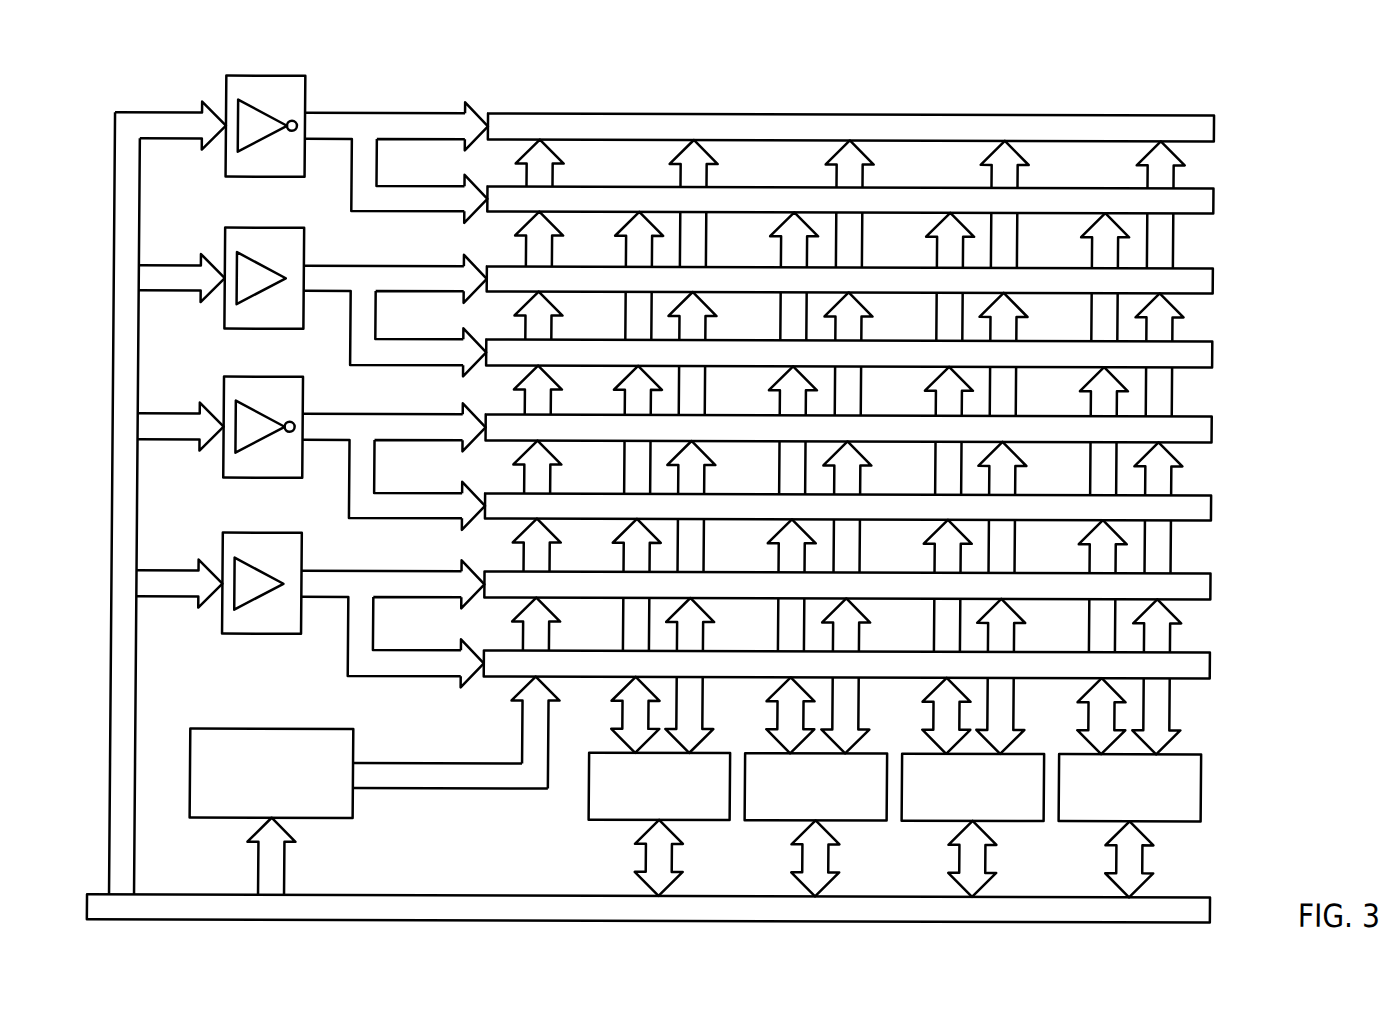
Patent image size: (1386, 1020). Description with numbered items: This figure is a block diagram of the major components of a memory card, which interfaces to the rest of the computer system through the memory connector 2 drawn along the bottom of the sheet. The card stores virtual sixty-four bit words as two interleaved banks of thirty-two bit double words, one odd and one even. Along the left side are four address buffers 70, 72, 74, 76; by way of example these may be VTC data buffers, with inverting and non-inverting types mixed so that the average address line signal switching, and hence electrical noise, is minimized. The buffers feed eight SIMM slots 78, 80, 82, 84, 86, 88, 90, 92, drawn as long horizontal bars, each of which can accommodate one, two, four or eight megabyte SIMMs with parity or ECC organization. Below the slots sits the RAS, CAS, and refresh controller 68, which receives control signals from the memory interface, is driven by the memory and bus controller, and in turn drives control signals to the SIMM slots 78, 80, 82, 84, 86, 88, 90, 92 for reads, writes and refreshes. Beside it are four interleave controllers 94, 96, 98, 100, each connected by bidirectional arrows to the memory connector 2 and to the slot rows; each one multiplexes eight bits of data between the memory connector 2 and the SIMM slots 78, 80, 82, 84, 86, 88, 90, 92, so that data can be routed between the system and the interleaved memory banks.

The memory connector 2 is at (1213, 896).
The RAS, CAS, and refresh controller 68 is at (274, 730).
The address buffer 70 is at (222, 106).
The address buffer 72 is at (224, 243).
The address buffer 74 is at (222, 390).
The address buffer 76 is at (222, 552).
The SIMM slot 78 is at (1214, 114).
The SIMM slot 80 is at (1214, 187).
The SIMM slot 82 is at (1214, 267).
The SIMM slot 84 is at (1214, 340).
The SIMM slot 86 is at (1214, 415).
The SIMM slot 88 is at (1214, 494).
The SIMM slot 90 is at (1214, 572).
The SIMM slot 92 is at (1214, 651).
The interleave controller 94 is at (616, 820).
The interleave controller 96 is at (772, 820).
The interleave controller 98 is at (929, 820).
The interleave controller 100 is at (1094, 821).